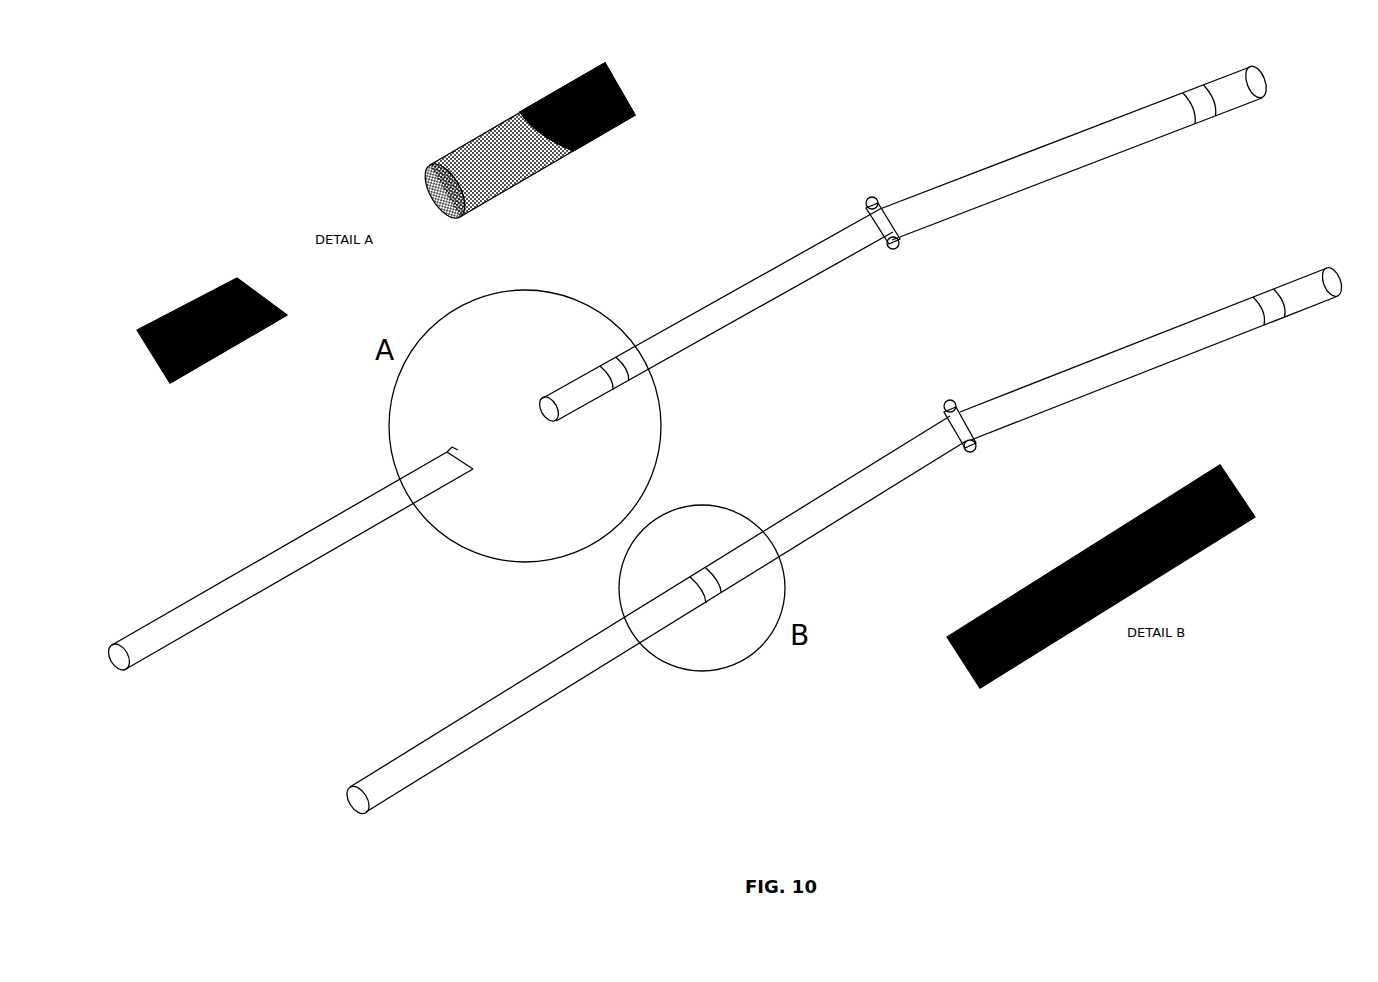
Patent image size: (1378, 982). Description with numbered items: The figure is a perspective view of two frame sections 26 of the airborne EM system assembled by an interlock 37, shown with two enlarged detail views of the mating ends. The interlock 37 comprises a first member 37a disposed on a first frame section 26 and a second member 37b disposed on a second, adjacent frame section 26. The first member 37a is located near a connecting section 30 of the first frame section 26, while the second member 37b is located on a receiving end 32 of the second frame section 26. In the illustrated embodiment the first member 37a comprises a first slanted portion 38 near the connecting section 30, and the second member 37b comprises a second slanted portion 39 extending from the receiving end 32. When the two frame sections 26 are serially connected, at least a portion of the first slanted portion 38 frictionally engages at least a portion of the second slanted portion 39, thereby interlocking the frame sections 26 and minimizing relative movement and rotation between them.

The frame section 26 is at (232, 570).
The connecting section 30 is at (465, 143).
The receiving end 32 is at (195, 378).
The interlock 37 is at (473, 553).
The first member 37a is at (617, 377).
The second member 37b is at (435, 470).
The first slanted portion 38 is at (607, 385).
The second slanted portion 39 is at (258, 282).